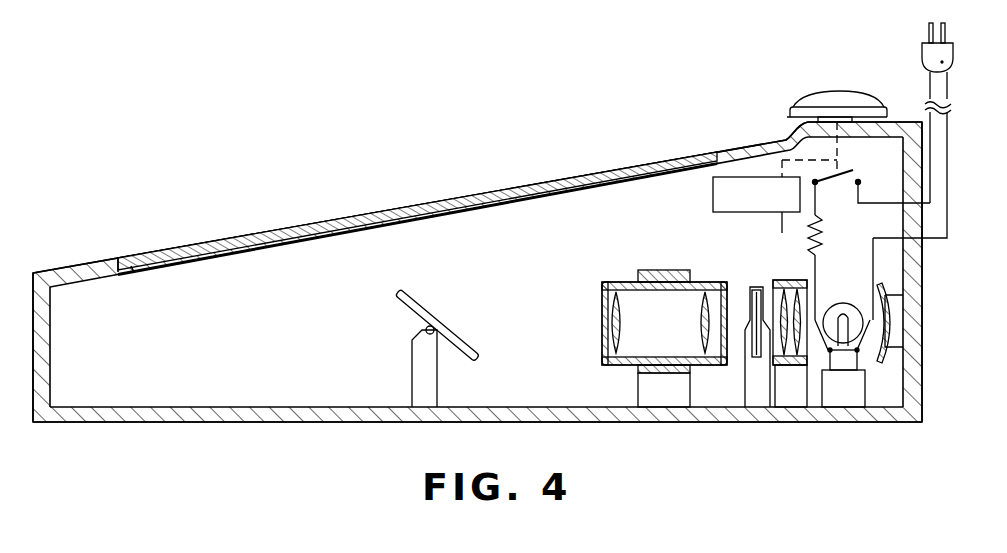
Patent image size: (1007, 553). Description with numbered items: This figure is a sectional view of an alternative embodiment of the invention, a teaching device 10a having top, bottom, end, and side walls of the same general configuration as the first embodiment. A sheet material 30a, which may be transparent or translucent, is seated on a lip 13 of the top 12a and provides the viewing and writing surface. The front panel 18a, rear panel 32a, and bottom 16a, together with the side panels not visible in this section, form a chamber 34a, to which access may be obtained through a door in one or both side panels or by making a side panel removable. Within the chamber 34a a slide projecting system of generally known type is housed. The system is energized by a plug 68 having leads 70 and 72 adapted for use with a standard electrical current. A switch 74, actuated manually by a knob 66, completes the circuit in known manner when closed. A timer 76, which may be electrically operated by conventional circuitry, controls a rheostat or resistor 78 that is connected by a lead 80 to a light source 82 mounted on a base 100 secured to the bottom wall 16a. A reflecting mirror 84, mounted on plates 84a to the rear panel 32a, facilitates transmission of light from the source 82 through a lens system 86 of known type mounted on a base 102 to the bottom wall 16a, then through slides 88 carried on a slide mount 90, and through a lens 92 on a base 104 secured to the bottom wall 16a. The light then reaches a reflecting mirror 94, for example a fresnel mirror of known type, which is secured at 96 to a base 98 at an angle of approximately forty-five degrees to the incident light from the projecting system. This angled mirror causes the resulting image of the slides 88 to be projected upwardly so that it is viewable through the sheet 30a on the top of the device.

The teaching device 10a is at (243, 228).
The top 12a is at (88, 263).
The lip 13 is at (133, 276).
The bottom 16a is at (560, 421).
The front panel 18a is at (52, 352).
The sheet material 30a is at (433, 200).
The rear panel 32a is at (905, 222).
The chamber 34a is at (276, 348).
The knob 66 is at (825, 94).
The plug 68 is at (925, 55).
The lead 70 is at (930, 97).
The lead 72 is at (930, 82).
The switch 74 is at (853, 174).
The timer 76 is at (713, 197).
The rheostat or resistor 78 is at (822, 225).
The lead 80 is at (807, 237).
The light source 82 is at (840, 305).
The reflecting mirror 84 is at (878, 308).
The plates 84a is at (893, 297).
The lens system 86 is at (788, 285).
The slides 88 is at (752, 292).
The slide mount 90 is at (752, 380).
The lens 92 is at (655, 300).
The reflecting mirror 94 is at (431, 311).
The securing point 96 is at (425, 330).
The base 98 is at (418, 375).
The base 100 is at (843, 395).
The base 102 is at (795, 402).
The base 104 is at (645, 395).